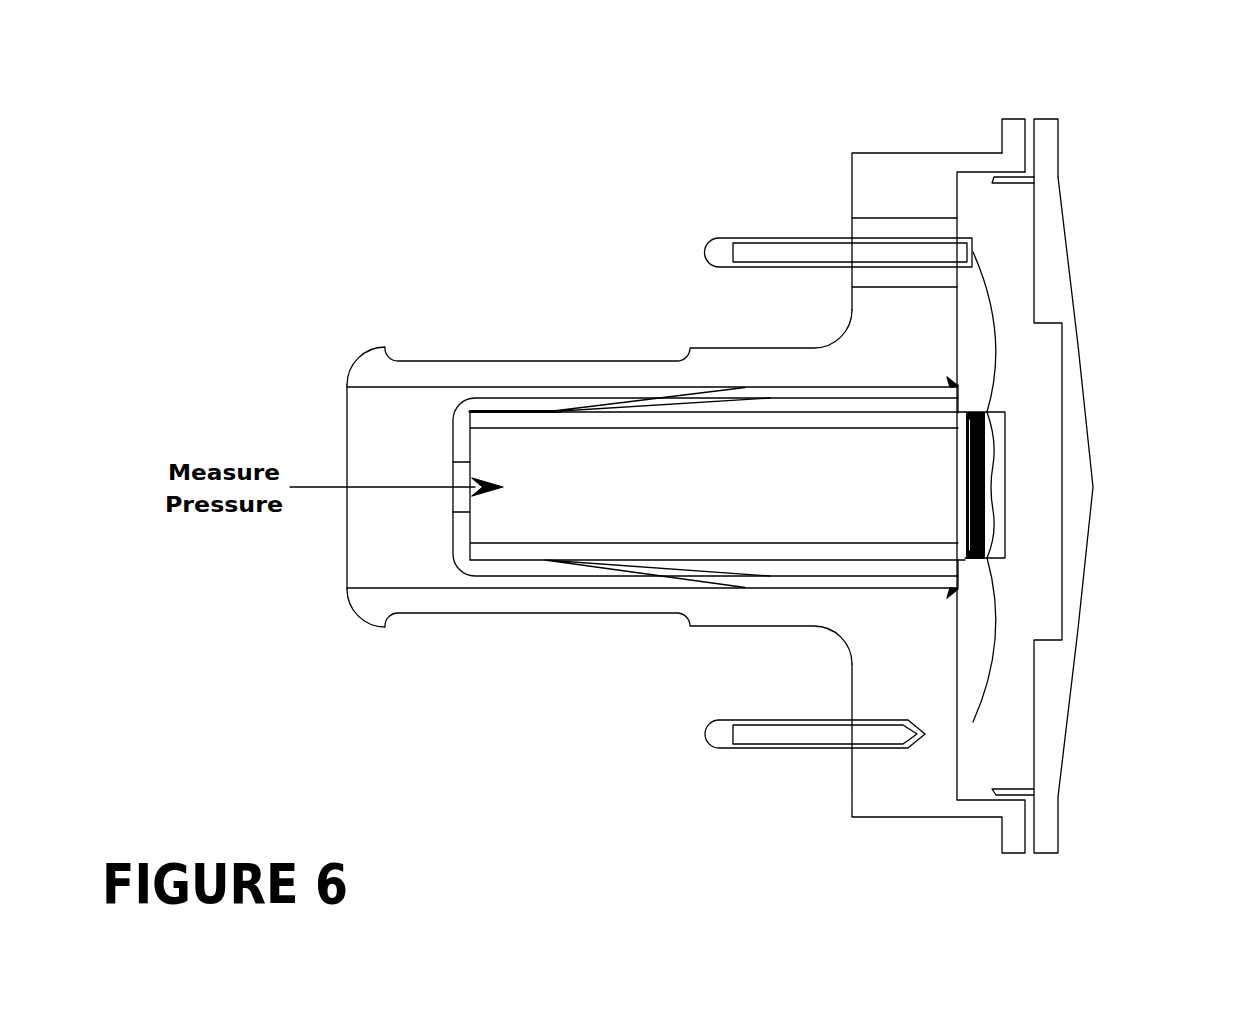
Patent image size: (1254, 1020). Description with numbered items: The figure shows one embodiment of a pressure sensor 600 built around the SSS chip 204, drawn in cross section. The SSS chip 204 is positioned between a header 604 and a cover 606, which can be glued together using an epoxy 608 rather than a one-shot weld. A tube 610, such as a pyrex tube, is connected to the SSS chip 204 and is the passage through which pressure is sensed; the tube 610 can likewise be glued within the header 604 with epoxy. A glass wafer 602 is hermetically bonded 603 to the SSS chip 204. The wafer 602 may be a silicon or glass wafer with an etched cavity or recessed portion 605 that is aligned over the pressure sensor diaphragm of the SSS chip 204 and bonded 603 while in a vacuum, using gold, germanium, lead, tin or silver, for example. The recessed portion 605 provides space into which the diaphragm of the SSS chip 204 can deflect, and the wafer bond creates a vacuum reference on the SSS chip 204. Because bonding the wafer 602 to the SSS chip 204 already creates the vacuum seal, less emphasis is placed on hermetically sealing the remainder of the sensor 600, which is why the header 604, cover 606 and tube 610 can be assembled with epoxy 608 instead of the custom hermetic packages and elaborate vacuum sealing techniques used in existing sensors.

The pressure sensor 600 is at (452, 104).
The tube 610 is at (495, 393).
The header 604 is at (866, 808).
The epoxy 608 is at (1029, 90).
The cover 606 is at (1092, 208).
The hermetic bond 603 is at (985, 572).
The SSS chip 204 is at (1005, 497).
The glass wafer 602 is at (1033, 432).
The recessed portion 605 is at (1005, 463).